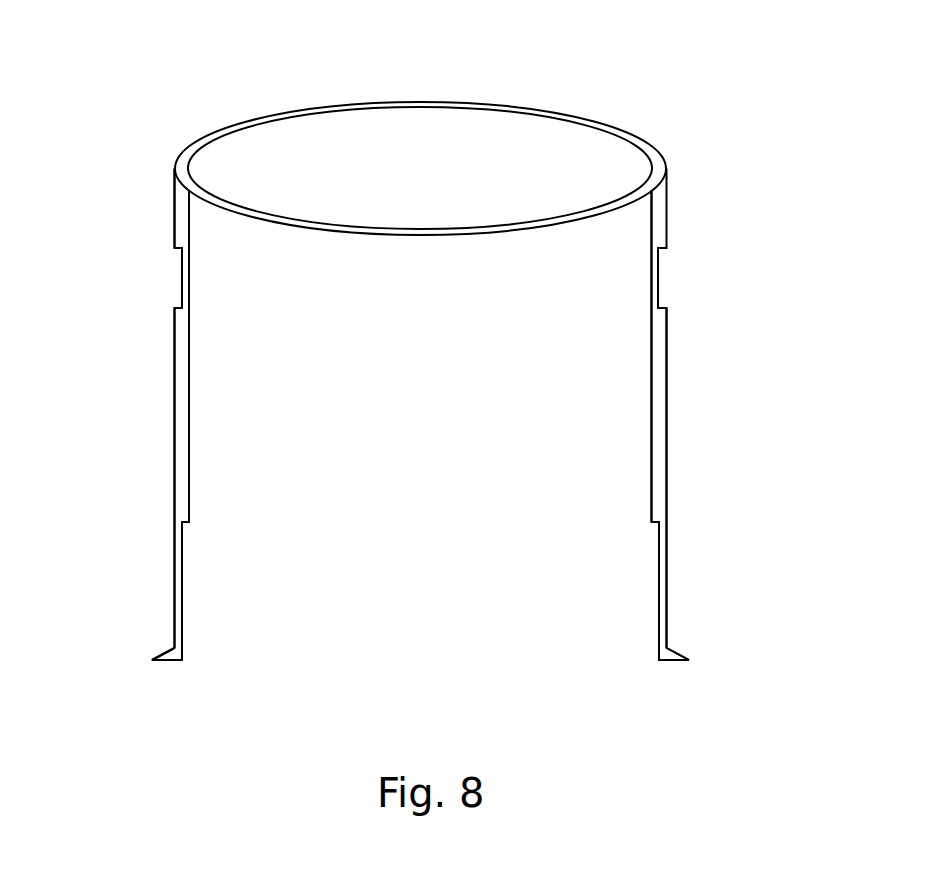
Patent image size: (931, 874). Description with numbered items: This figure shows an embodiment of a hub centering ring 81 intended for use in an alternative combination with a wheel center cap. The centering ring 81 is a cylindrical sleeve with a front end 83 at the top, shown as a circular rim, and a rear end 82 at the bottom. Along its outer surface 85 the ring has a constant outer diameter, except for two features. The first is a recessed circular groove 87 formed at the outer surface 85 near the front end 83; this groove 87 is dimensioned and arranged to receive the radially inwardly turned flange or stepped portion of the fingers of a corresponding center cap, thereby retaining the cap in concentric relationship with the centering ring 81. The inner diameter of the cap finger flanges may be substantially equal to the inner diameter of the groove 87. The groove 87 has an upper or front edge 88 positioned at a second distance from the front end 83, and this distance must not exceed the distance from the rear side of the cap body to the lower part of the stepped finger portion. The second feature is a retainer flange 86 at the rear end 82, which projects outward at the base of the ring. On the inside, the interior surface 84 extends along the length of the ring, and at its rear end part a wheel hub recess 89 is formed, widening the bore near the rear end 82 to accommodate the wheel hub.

The hub centering ring 81 is at (706, 460).
The rear end 82 is at (520, 642).
The front end 83 is at (519, 106).
The interior surface 84 is at (650, 402).
The outer surface 85 is at (169, 425).
The retainer flange 86 is at (163, 652).
The recessed circular groove 87 is at (662, 290).
The front edge 88 is at (662, 252).
The wheel hub recess 89 is at (182, 588).